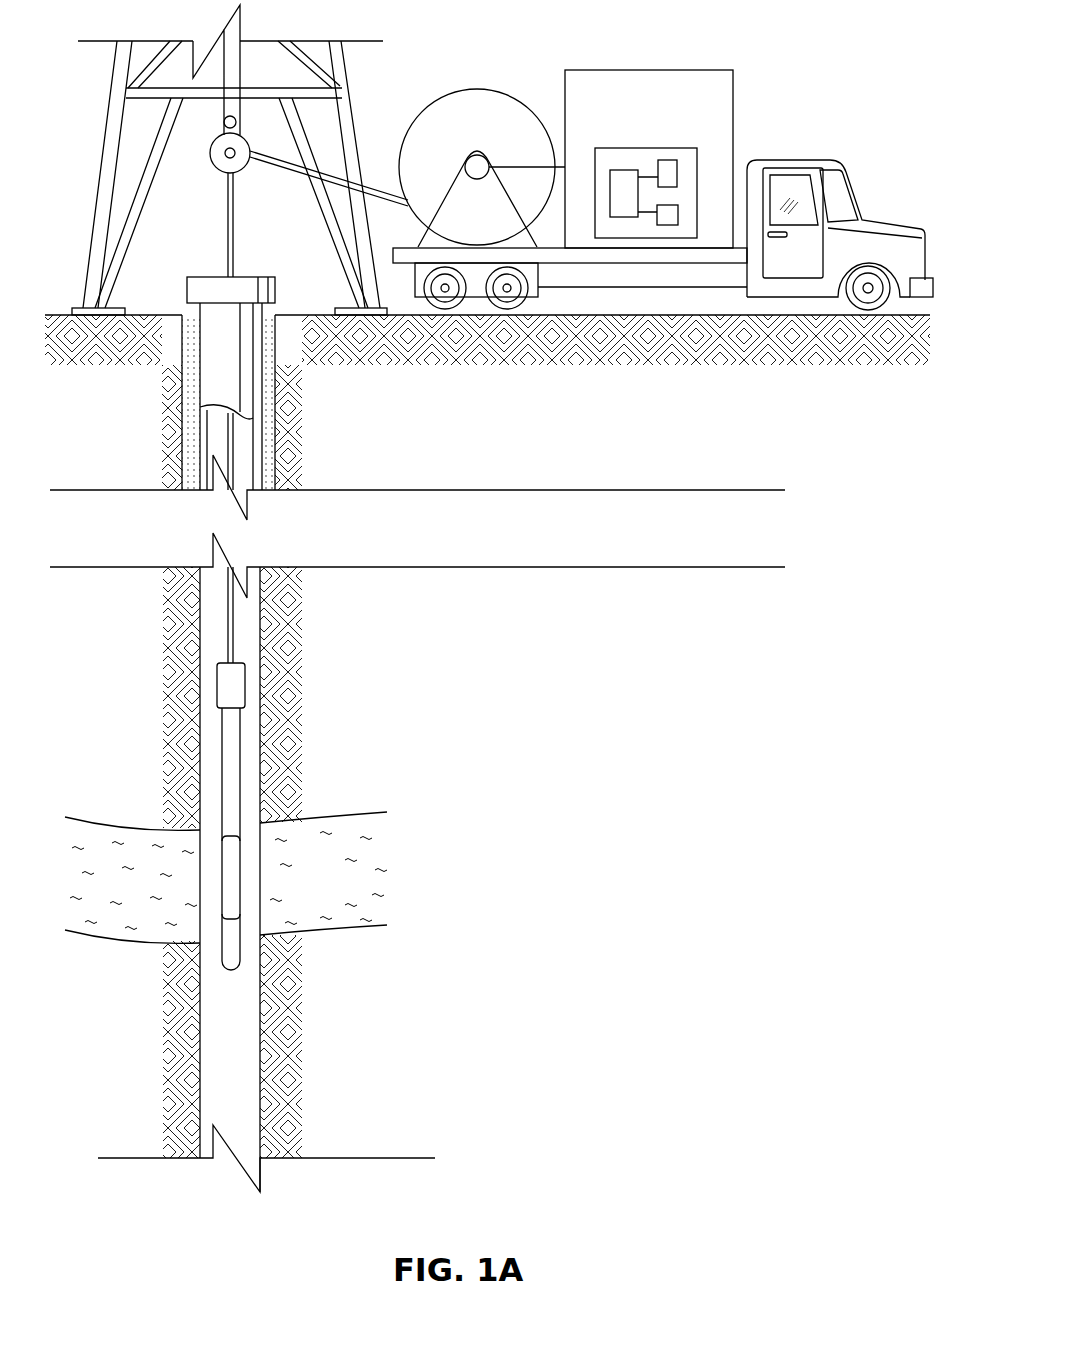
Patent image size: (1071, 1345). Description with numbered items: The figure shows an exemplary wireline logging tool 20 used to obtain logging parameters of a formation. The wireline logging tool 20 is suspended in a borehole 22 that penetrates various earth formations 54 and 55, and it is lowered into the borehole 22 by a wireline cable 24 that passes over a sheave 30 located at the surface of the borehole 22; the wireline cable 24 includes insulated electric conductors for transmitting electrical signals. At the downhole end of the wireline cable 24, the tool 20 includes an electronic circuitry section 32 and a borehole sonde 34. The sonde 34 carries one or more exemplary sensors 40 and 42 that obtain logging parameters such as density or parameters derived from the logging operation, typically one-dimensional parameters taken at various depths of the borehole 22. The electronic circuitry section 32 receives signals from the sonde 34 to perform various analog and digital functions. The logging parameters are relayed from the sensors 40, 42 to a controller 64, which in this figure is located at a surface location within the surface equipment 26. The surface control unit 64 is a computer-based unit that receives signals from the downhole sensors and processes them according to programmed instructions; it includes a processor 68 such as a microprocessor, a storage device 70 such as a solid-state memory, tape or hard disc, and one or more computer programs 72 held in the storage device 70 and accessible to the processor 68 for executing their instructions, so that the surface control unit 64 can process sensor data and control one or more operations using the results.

The wireline logging tool 20 is at (236, 806).
The borehole 22 is at (212, 598).
The wireline cable 24 is at (227, 254).
The surface equipment 26 is at (705, 70).
The sheave 30 is at (492, 89).
The electronic circuitry section 32 is at (217, 684).
The borehole sonde 34 is at (230, 971).
The sensor 40 is at (222, 840).
The sensor 42 is at (222, 917).
The earth formation 54 is at (341, 693).
The earth formation 55 is at (332, 897).
The controller 64 is at (595, 190).
The processor 68 is at (632, 217).
The storage device 70 is at (677, 166).
The computer programs 72 is at (678, 210).